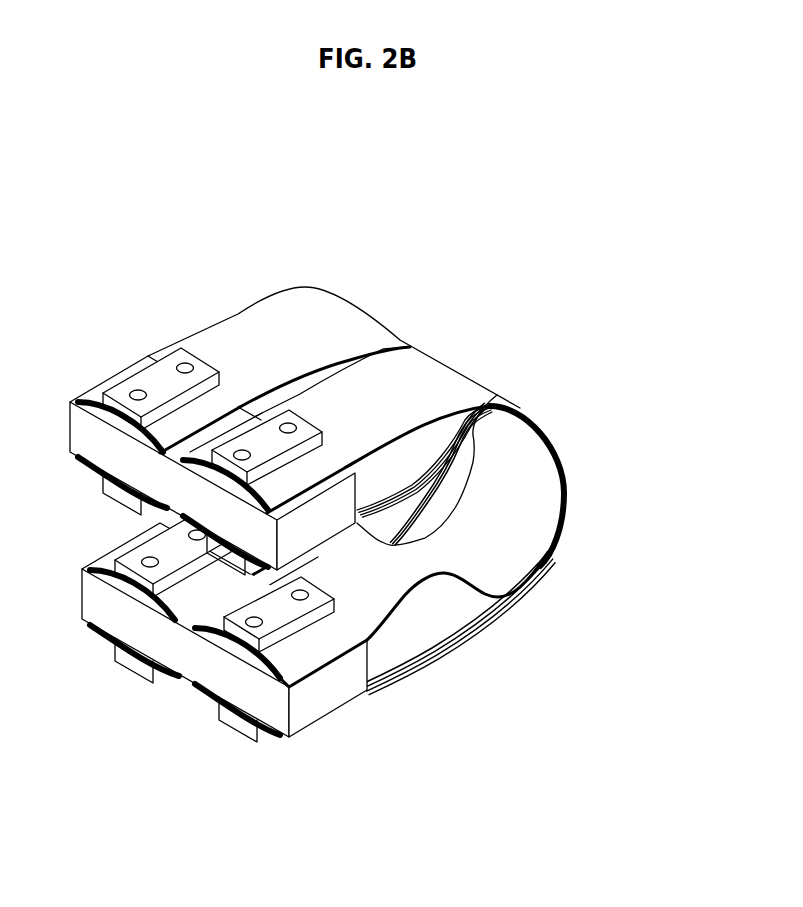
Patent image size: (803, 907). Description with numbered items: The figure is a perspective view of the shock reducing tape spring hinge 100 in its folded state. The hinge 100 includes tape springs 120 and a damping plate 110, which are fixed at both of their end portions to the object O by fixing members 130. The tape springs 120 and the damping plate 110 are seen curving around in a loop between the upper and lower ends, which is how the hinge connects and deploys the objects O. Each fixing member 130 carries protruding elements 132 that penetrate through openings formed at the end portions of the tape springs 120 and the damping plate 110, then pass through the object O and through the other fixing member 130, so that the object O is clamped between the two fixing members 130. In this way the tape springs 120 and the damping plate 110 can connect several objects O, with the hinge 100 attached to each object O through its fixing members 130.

The shock reducing tape spring hinge 100 is at (371, 442).
The damping plate 110 is at (523, 538).
The tape springs 120 is at (377, 521).
The fixing members 130 is at (226, 518).
The protruding elements 132 is at (137, 391).
The object O is at (330, 685).